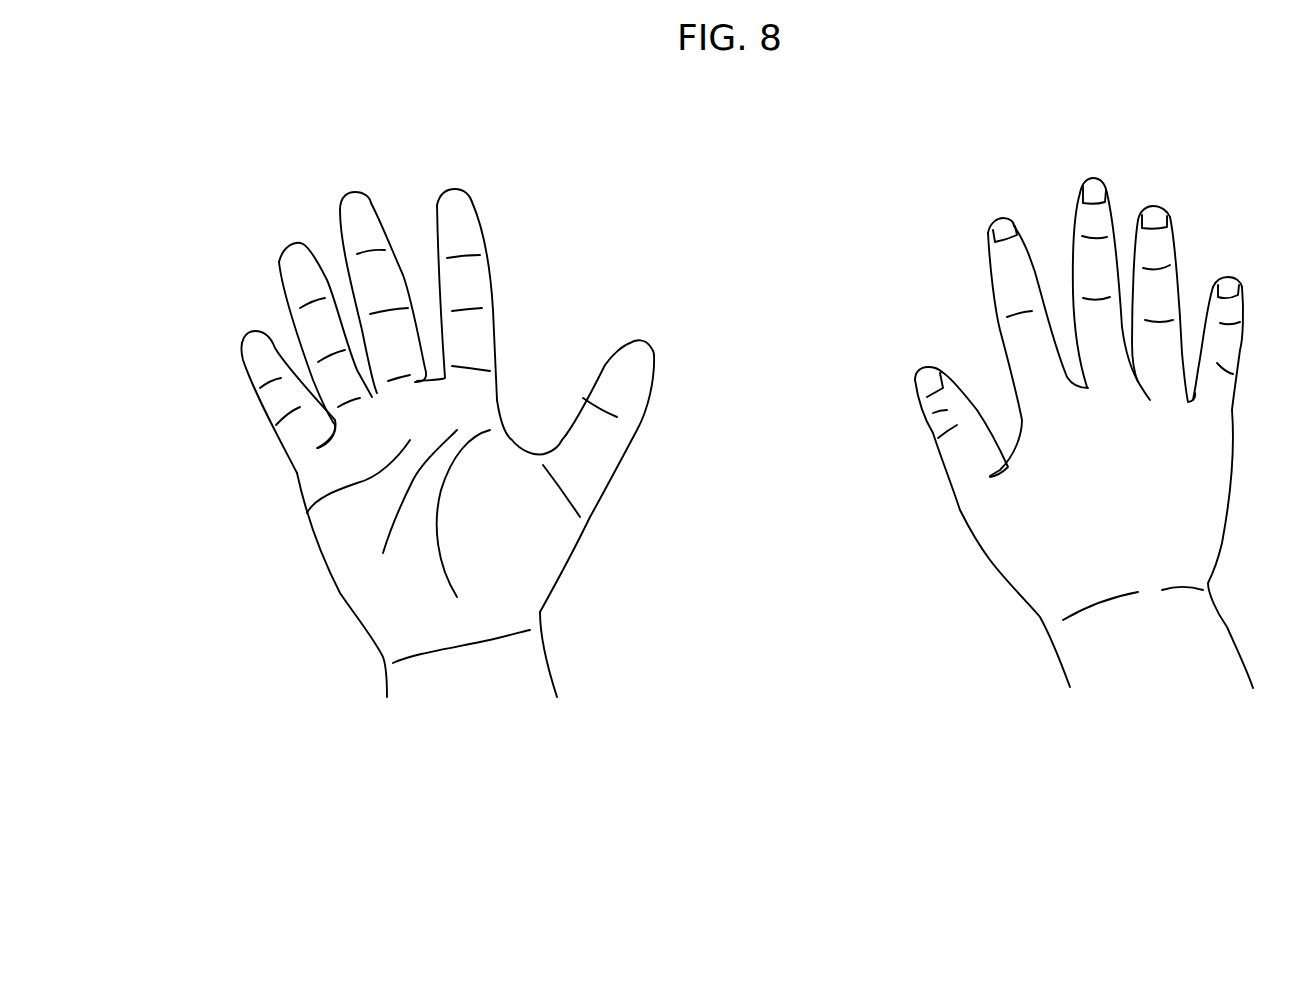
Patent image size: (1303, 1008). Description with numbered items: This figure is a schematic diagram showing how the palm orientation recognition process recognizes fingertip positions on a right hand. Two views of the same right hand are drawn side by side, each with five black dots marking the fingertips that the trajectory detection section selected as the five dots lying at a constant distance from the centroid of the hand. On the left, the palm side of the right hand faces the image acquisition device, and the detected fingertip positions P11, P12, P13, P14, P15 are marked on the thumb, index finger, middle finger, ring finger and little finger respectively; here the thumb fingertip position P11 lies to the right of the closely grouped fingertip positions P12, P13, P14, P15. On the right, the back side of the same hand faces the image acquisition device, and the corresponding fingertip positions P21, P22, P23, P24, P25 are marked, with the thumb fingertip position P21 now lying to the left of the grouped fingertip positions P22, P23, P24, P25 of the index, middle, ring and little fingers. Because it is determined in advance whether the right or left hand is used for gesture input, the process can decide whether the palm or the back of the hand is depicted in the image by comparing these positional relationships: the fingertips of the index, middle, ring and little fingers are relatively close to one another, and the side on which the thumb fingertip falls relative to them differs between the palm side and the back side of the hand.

The fingertip position P11 is at (644, 350).
The fingertip position P12 is at (455, 198).
The fingertip position P13 is at (354, 197).
The fingertip position P14 is at (290, 248).
The fingertip position P15 is at (250, 333).
The fingertip position P21 is at (918, 373).
The fingertip position P22 is at (1003, 222).
The fingertip position P23 is at (1094, 180).
The fingertip position P24 is at (1153, 205).
The fingertip position P25 is at (1228, 278).